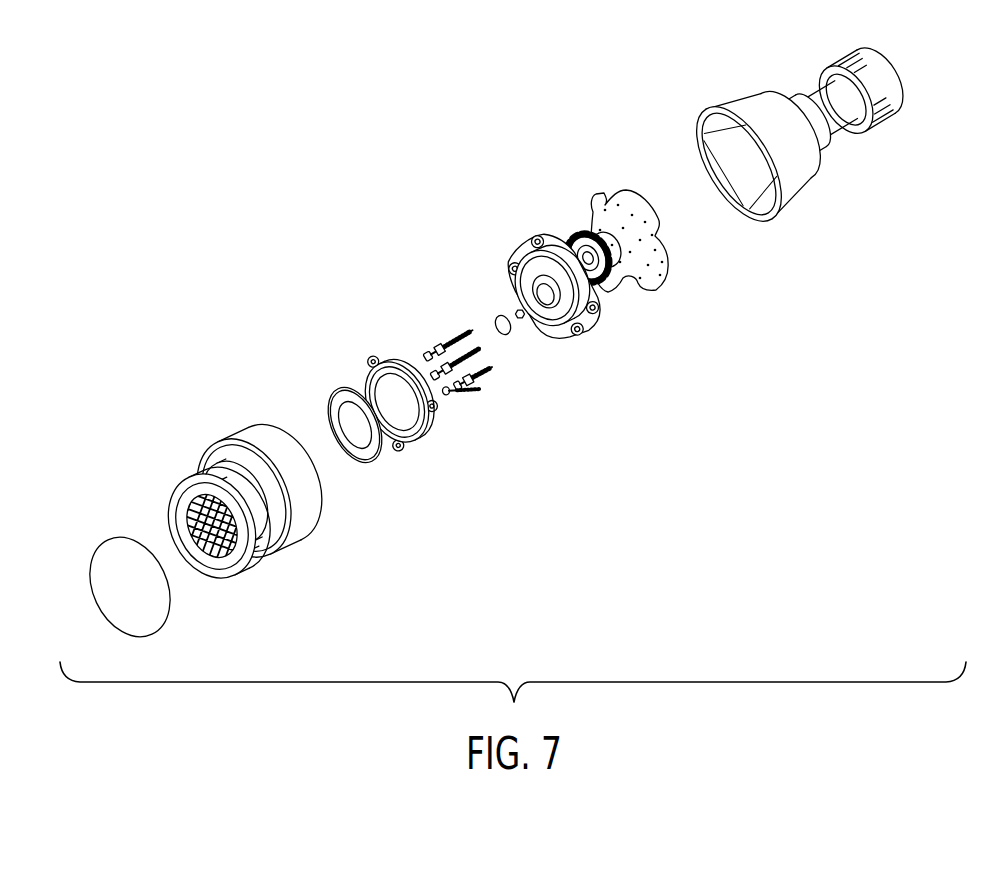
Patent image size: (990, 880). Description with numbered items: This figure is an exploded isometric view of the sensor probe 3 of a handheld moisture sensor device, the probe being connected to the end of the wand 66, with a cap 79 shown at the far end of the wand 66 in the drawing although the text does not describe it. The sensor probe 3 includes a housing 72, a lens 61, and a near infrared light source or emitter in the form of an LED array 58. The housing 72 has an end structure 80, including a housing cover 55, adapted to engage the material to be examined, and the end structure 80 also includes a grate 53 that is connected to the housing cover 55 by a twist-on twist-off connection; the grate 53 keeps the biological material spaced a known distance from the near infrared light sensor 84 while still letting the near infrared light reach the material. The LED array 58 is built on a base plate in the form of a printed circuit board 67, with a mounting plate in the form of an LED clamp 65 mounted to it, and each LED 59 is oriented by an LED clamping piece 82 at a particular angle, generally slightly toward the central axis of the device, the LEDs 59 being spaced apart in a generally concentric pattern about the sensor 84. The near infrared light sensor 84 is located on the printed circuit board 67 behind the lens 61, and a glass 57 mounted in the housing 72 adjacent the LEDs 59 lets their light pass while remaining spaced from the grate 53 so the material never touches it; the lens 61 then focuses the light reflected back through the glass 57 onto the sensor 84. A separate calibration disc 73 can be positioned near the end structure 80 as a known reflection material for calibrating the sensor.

The sensor probe 3 is at (512, 100).
The grate 53 is at (180, 487).
The housing cover 55 is at (252, 432).
The glass 57 is at (340, 394).
The LED array 58 is at (598, 339).
The LED 59 is at (432, 338).
The lens 61 is at (500, 317).
The LED clamp 65 is at (573, 240).
The wand 66 is at (843, 125).
The printed circuit board 67 is at (600, 197).
The housing 72 is at (735, 100).
The calibration disc 73 is at (114, 552).
The cap nut 79 is at (897, 100).
The end structure 80 is at (290, 582).
The LED clamping piece 82 is at (530, 243).
The near infrared light sensor 84 is at (522, 318).